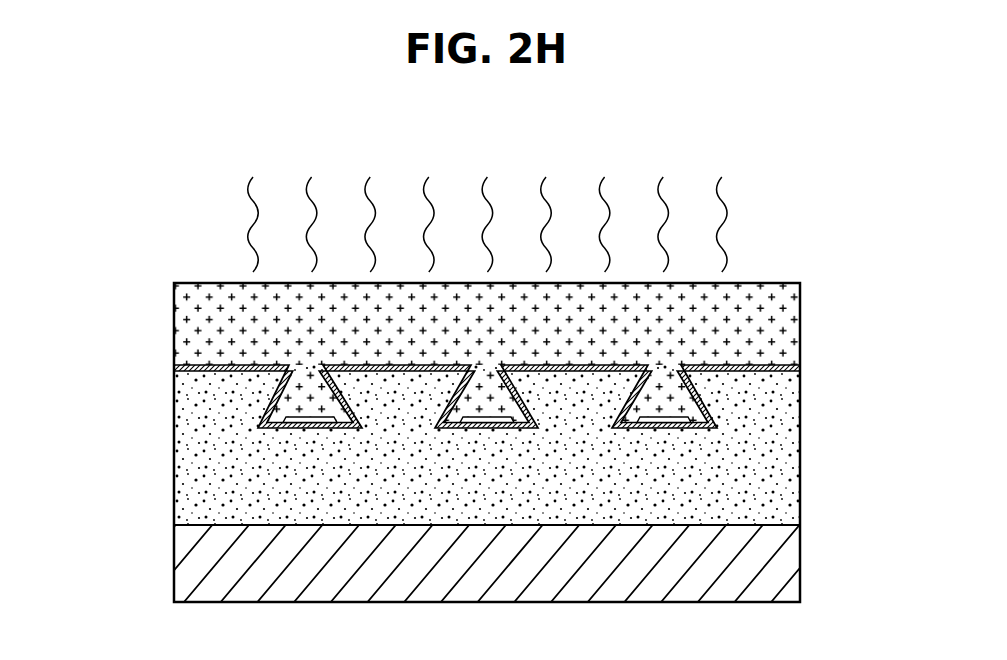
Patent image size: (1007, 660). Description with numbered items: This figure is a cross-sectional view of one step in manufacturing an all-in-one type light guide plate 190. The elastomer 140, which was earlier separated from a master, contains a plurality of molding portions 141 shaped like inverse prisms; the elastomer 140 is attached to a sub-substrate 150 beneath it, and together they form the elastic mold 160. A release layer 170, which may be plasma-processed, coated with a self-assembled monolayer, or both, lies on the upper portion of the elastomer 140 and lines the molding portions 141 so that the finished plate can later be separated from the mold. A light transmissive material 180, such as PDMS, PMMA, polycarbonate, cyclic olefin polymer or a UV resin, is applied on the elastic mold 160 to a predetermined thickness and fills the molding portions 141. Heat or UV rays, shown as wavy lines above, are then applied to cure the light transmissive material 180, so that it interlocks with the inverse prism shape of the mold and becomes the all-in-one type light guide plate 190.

The elastomer 140 is at (800, 452).
The molding portions 141 is at (337, 415).
The sub-substrate 150 is at (800, 570).
The elastic mold 160 is at (165, 507).
The release layer 170 is at (800, 368).
The light transmissive material 180 is at (800, 318).
The all-in-one type light guide plate 190 is at (162, 327).